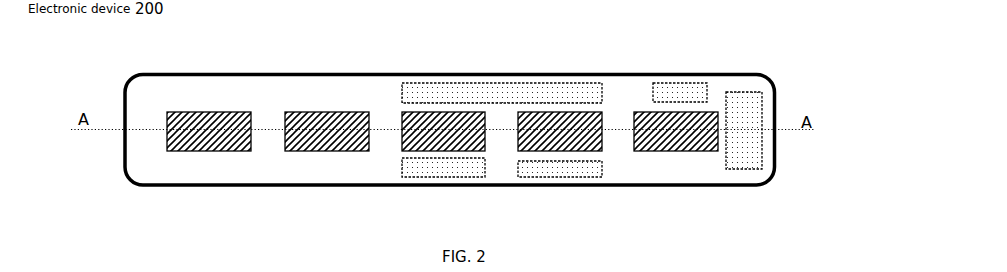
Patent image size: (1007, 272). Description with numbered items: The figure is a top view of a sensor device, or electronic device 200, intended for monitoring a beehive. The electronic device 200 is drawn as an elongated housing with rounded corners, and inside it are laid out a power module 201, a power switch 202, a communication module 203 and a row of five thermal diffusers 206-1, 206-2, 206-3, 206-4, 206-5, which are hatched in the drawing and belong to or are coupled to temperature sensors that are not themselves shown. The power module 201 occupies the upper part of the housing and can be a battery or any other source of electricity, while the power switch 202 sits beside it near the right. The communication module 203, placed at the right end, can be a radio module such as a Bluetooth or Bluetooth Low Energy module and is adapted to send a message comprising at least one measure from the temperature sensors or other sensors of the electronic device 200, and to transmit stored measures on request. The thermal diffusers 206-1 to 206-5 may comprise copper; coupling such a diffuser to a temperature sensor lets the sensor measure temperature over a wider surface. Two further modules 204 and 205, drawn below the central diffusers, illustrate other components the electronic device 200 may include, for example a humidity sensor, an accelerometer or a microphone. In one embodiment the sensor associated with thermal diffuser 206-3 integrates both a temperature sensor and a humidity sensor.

The electronic device 200 is at (772, 84).
The power module 201 is at (490, 84).
The power switch 202 is at (672, 83).
The communication module 203 is at (730, 171).
The module 204 is at (560, 170).
The module 205 is at (423, 175).
The thermal diffuser 206-1 is at (170, 152).
The thermal diffuser 206-2 is at (288, 152).
The thermal diffuser 206-3 is at (402, 133).
The thermal diffuser 206-4 is at (518, 134).
The thermal diffuser 206-5 is at (655, 152).